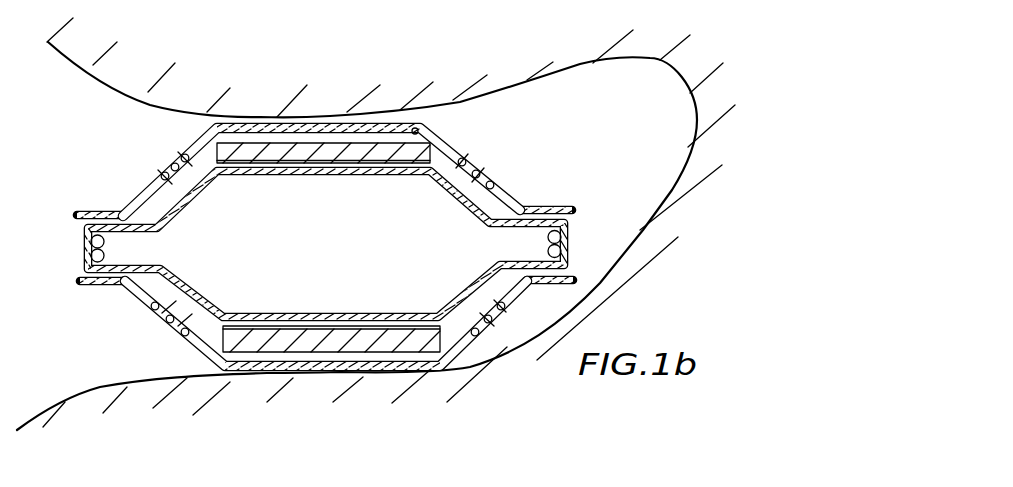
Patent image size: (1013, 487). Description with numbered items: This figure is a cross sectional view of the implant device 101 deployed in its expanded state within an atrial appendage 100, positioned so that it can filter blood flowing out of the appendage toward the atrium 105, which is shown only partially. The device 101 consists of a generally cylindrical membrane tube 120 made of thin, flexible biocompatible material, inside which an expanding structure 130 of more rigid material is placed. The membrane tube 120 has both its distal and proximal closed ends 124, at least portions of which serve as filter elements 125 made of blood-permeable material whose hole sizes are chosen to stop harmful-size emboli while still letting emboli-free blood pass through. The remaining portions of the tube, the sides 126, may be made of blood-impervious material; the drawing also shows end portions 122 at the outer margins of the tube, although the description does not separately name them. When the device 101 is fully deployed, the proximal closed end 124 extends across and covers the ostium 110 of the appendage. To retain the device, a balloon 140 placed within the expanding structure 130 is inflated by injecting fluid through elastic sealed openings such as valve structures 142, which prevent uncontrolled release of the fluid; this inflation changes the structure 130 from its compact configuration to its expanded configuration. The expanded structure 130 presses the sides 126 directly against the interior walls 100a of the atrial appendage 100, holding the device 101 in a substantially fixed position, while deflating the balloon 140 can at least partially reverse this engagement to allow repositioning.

The atrial appendage 100 is at (580, 67).
The interior walls of atrial appendage 100a is at (383, 112).
The device 101 is at (353, 274).
The atrium 105 is at (126, 83).
The ostium 110 is at (192, 105).
The membrane tube 120 is at (462, 128).
The flange 122 is at (100, 210).
The closed ends 124 is at (188, 147).
The filter elements 125 is at (157, 177).
The sides 126 is at (430, 123).
The expanding structure 130 is at (330, 152).
The balloon 140 is at (204, 190).
The valve structures 142 is at (105, 248).